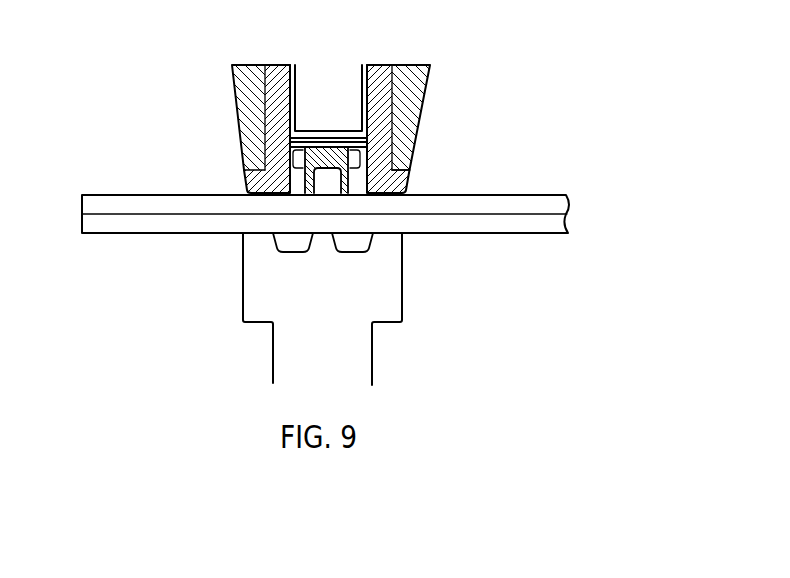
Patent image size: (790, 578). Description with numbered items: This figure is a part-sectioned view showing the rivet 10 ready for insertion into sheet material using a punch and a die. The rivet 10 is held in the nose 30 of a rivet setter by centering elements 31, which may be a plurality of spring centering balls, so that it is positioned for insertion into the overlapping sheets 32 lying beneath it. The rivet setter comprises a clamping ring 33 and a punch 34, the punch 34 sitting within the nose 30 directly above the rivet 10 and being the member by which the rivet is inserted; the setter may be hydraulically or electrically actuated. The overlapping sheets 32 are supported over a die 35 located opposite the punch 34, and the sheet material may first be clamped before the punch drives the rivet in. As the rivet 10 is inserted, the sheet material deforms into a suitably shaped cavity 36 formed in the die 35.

The rivet 10 is at (362, 150).
The nose 30 is at (438, 98).
The centering elements 31 is at (291, 156).
The overlapping sheets 32 is at (81, 223).
The clamping ring 33 is at (398, 184).
The punch 34 is at (341, 102).
The die 35 is at (377, 288).
The cavity 36 is at (362, 242).